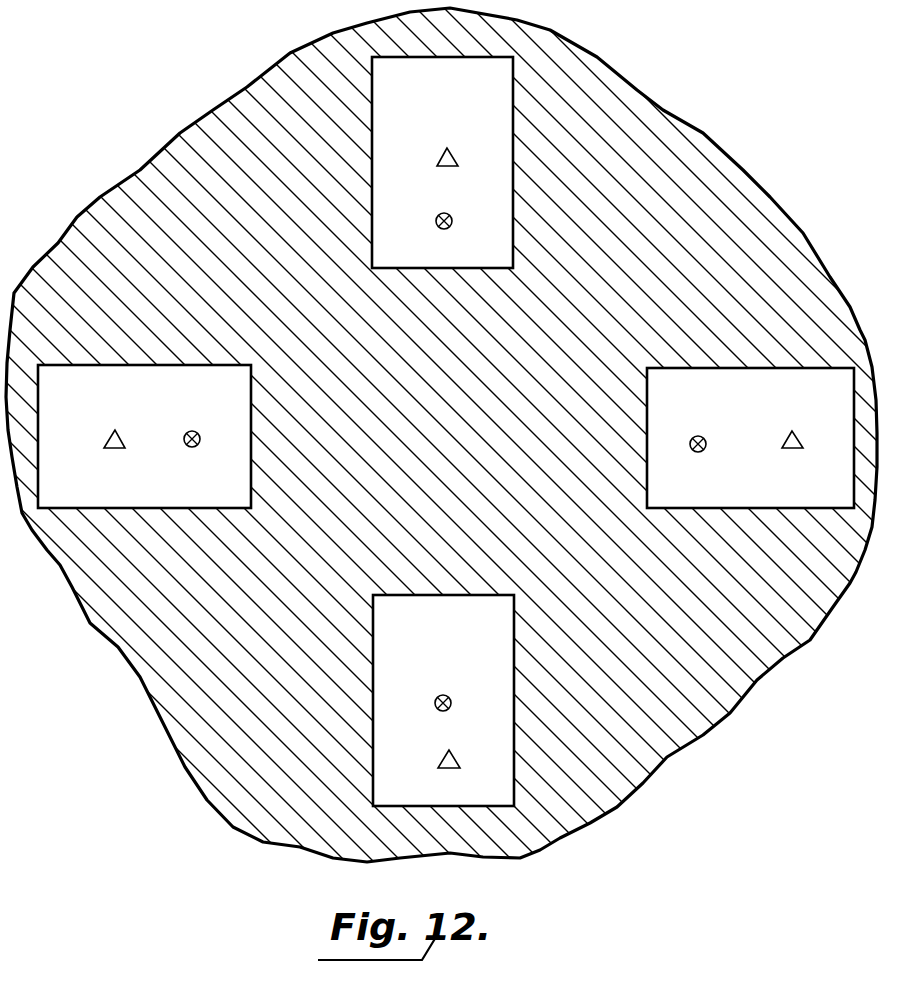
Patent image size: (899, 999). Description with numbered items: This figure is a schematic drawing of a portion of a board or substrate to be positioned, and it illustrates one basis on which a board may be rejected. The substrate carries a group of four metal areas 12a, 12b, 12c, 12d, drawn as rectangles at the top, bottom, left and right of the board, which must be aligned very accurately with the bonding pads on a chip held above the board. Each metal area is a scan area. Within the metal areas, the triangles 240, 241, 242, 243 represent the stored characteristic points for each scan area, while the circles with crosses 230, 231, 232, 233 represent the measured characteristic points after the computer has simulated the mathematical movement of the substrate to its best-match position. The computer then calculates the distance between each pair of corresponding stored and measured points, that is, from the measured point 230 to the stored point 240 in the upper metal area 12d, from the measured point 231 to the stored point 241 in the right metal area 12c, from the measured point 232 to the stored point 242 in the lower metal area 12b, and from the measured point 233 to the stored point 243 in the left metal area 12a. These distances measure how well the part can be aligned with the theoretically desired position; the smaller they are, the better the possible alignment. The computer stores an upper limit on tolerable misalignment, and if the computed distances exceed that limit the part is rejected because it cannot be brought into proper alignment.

The metal area 12a is at (183, 396).
The metal area 12b is at (465, 637).
The metal area 12c is at (775, 398).
The metal area 12d is at (460, 92).
The measured characteristic point 230 is at (436, 221).
The measured characteristic point 231 is at (695, 452).
The measured characteristic point 232 is at (443, 695).
The measured characteristic point 233 is at (190, 447).
The stored characteristic point 240 is at (449, 149).
The stored characteristic point 241 is at (790, 450).
The stored characteristic point 242 is at (441, 758).
The stored characteristic point 243 is at (113, 435).